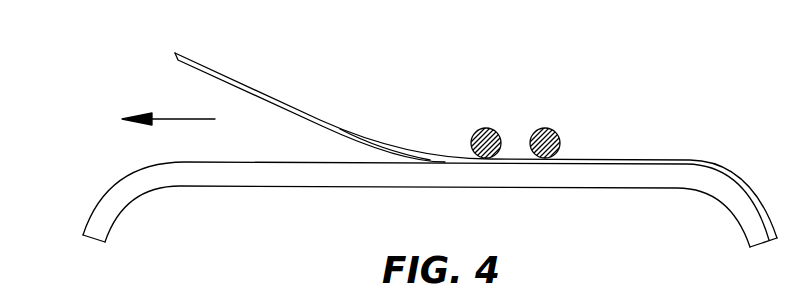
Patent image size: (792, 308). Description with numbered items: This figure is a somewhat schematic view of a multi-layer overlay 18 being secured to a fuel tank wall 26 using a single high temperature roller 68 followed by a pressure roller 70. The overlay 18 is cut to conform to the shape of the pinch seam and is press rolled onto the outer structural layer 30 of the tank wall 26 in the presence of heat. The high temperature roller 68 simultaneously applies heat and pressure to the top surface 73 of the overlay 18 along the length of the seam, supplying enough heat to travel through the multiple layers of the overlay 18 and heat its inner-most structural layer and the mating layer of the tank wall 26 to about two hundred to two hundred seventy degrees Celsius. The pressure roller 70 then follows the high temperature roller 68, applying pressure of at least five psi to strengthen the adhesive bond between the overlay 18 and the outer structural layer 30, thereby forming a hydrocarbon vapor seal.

The multi-layer overlay 18 is at (274, 86).
The top surface 73 is at (369, 133).
The outer structural layer 30 is at (308, 175).
The tank wall 26 is at (480, 196).
The high temperature roller 68 is at (498, 128).
The pressure roller 70 is at (560, 128).